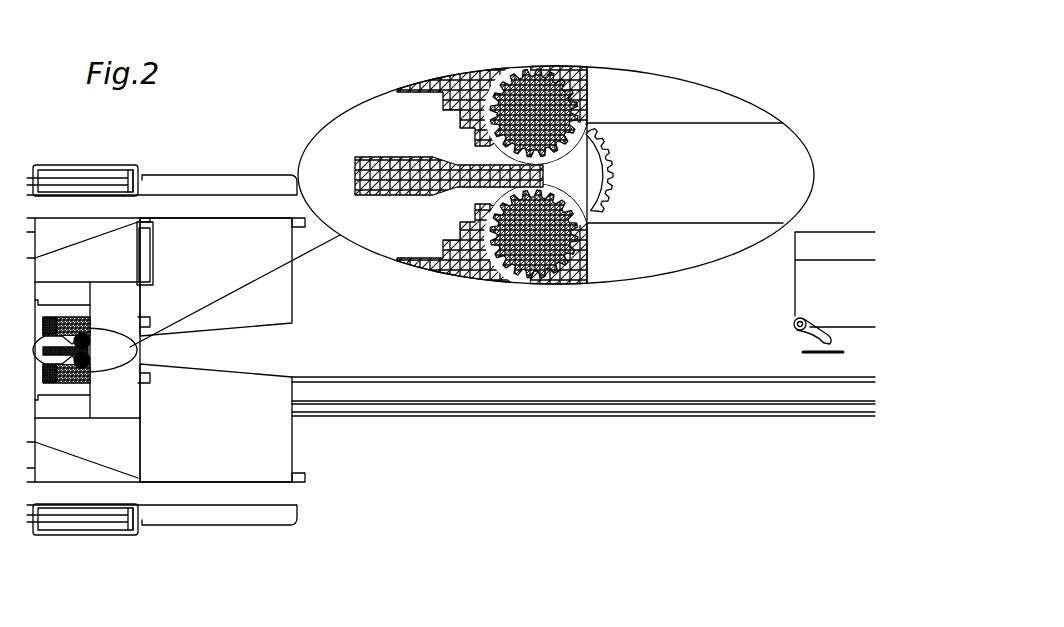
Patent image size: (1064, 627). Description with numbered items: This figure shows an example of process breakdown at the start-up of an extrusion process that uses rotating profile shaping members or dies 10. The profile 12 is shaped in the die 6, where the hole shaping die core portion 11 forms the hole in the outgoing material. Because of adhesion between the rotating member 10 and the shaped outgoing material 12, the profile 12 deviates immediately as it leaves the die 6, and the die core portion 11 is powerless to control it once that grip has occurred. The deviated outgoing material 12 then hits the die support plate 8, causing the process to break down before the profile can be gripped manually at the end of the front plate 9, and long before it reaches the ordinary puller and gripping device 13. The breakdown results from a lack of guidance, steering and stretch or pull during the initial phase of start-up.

The die 6 is at (73, 383).
The die support plate 8 is at (710, 120).
The front plate 9 is at (258, 438).
The rotating profile shaping member/die 10 is at (505, 245).
The hole shaping die core portion 11 is at (400, 167).
The profile 12 is at (590, 127).
The puller and gripping device 13 is at (806, 332).